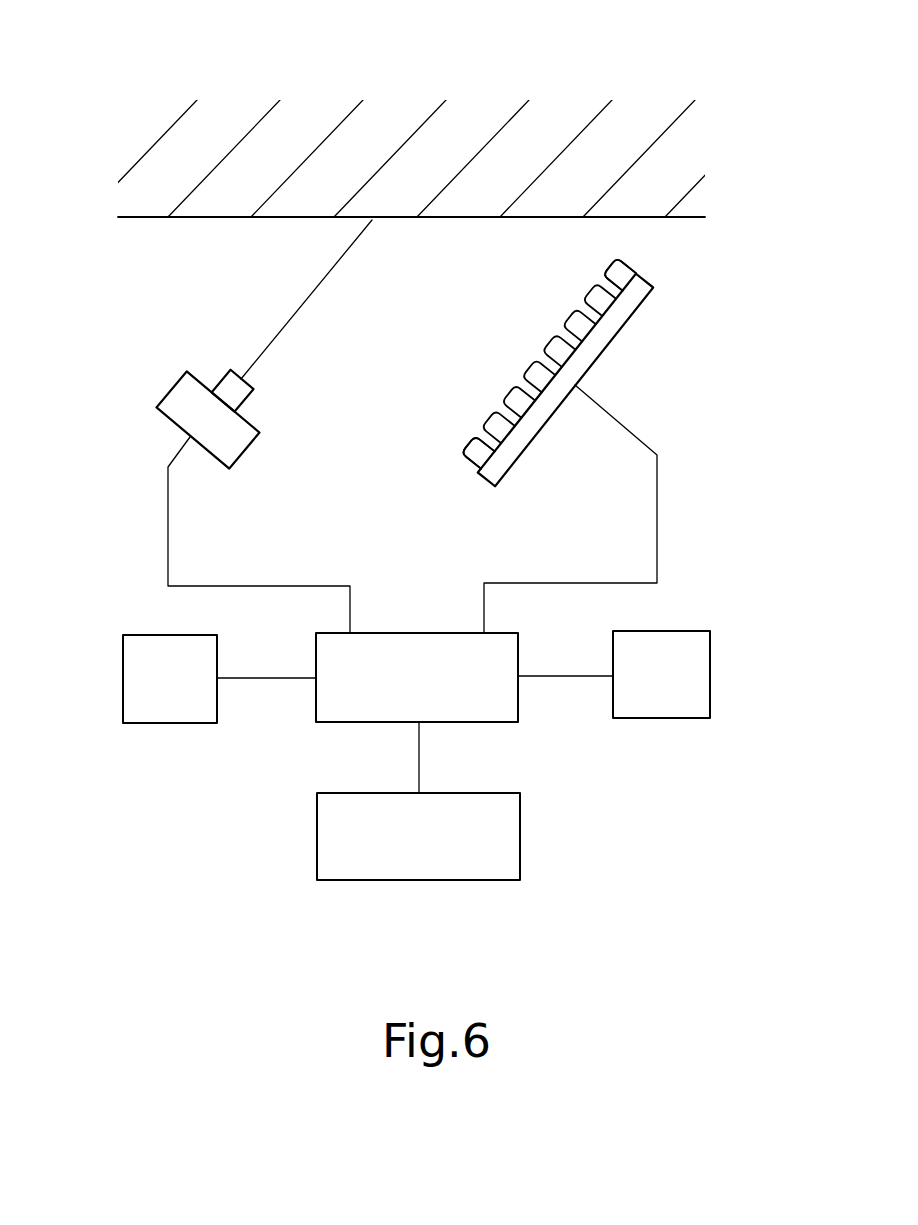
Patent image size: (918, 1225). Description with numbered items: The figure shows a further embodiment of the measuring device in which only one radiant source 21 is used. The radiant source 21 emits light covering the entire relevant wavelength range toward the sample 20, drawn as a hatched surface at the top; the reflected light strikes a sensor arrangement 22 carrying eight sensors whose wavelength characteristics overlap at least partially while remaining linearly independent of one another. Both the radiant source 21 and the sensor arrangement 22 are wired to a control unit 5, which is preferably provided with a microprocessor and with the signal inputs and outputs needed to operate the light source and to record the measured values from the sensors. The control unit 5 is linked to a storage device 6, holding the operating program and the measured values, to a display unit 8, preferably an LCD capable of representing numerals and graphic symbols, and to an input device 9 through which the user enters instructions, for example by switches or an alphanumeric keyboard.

The sample 20 is at (487, 113).
The radiant source 21 is at (178, 386).
The sensor array receiver 22 is at (591, 434).
The control unit 5 is at (513, 693).
The storage device 6 is at (663, 715).
The display unit 8 is at (468, 873).
The input device 9 is at (180, 727).